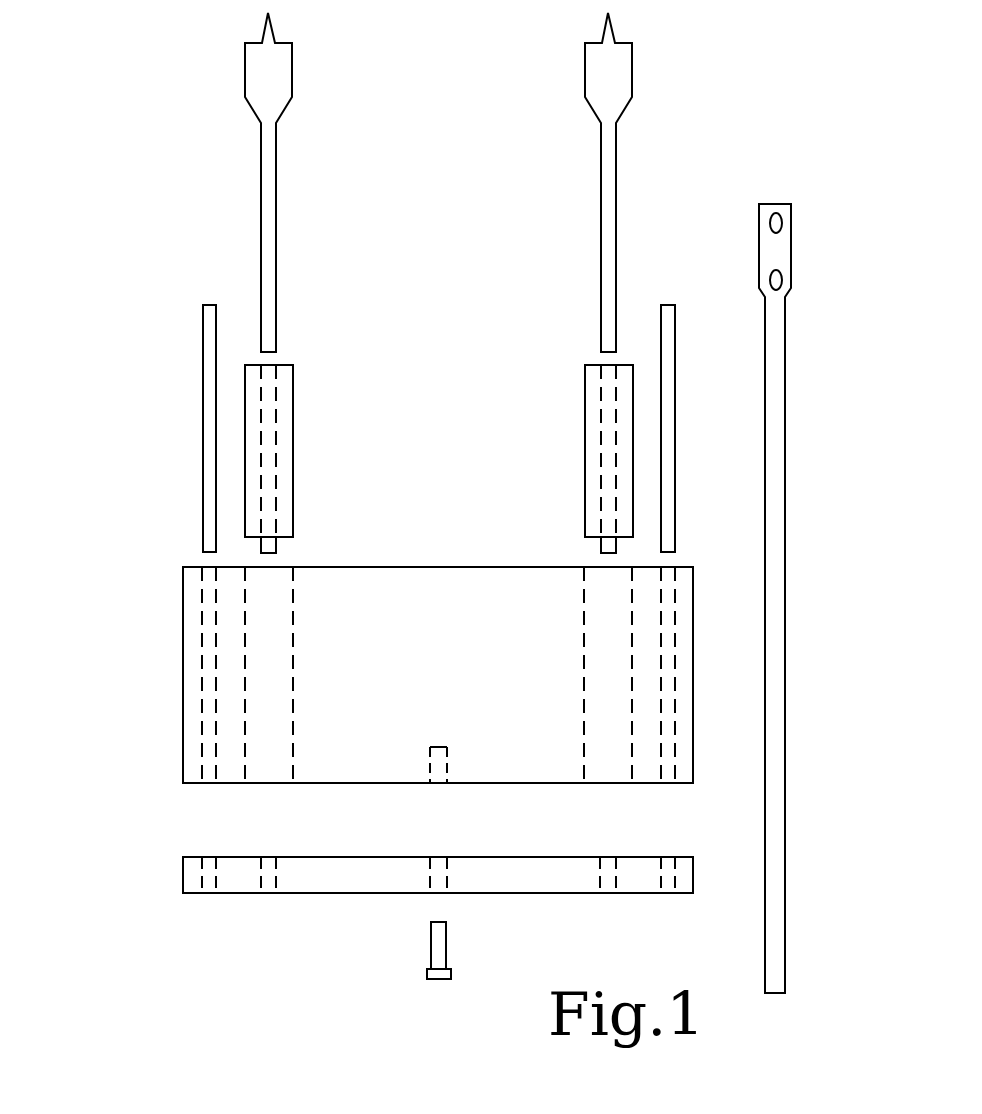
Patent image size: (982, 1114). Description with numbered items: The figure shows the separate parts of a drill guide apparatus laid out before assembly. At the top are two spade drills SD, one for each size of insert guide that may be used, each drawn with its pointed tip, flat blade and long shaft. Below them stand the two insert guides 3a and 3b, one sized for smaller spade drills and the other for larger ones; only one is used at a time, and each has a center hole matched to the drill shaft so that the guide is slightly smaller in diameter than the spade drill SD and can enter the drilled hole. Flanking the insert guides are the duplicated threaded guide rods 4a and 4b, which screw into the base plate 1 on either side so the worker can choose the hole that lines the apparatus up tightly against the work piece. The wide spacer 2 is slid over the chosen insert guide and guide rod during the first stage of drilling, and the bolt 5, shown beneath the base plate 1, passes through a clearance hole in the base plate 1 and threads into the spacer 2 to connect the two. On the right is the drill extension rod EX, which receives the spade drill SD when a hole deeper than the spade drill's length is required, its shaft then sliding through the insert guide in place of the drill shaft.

The spade drill SD is at (262, 72).
The drill extension rod EX is at (773, 204).
The base plate 1 is at (183, 876).
The spacer 2 is at (472, 567).
The insert guide 3a is at (293, 385).
The insert guide 3b is at (584, 386).
The guide rod 4a is at (202, 362).
The guide rod 4b is at (675, 362).
The bolt 5 is at (428, 950).